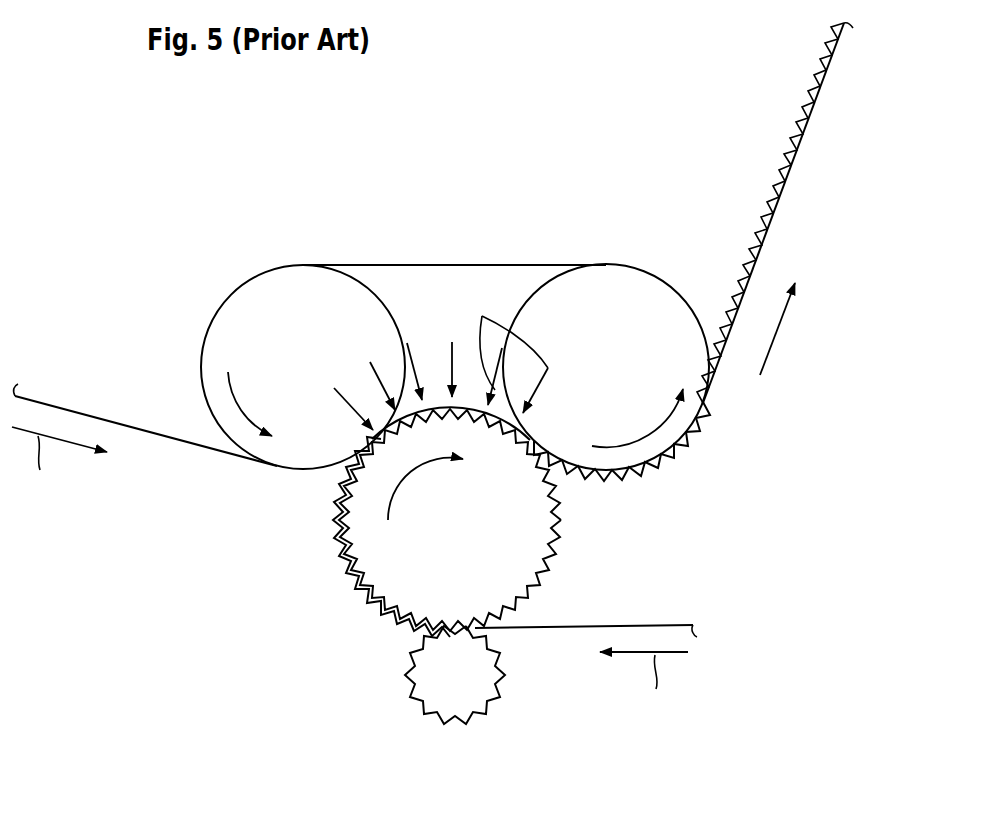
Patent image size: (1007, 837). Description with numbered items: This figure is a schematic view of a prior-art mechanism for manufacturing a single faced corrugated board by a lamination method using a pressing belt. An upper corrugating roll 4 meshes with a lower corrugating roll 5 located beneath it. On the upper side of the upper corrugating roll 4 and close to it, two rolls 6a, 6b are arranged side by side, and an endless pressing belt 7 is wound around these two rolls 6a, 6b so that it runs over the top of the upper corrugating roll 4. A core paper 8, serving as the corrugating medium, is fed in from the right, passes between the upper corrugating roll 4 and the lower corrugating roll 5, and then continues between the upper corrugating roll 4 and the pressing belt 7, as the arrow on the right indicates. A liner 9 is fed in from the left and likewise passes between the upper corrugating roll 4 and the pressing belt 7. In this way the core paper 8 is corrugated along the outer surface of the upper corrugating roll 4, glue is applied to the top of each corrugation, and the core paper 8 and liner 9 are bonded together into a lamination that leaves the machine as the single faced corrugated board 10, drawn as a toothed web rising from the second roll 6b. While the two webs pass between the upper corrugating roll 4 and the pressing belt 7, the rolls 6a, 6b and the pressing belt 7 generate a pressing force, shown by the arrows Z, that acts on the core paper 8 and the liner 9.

The upper corrugating roll 4 is at (560, 522).
The lower corrugating roll 5 is at (458, 723).
The roll 6a is at (244, 304).
The roll 6b is at (657, 293).
The pressing belt 7 is at (432, 263).
The core paper 8 is at (663, 623).
The liner 9 is at (76, 412).
The single faced corrugated board 10 is at (812, 105).
The arrows Z is at (441, 357).